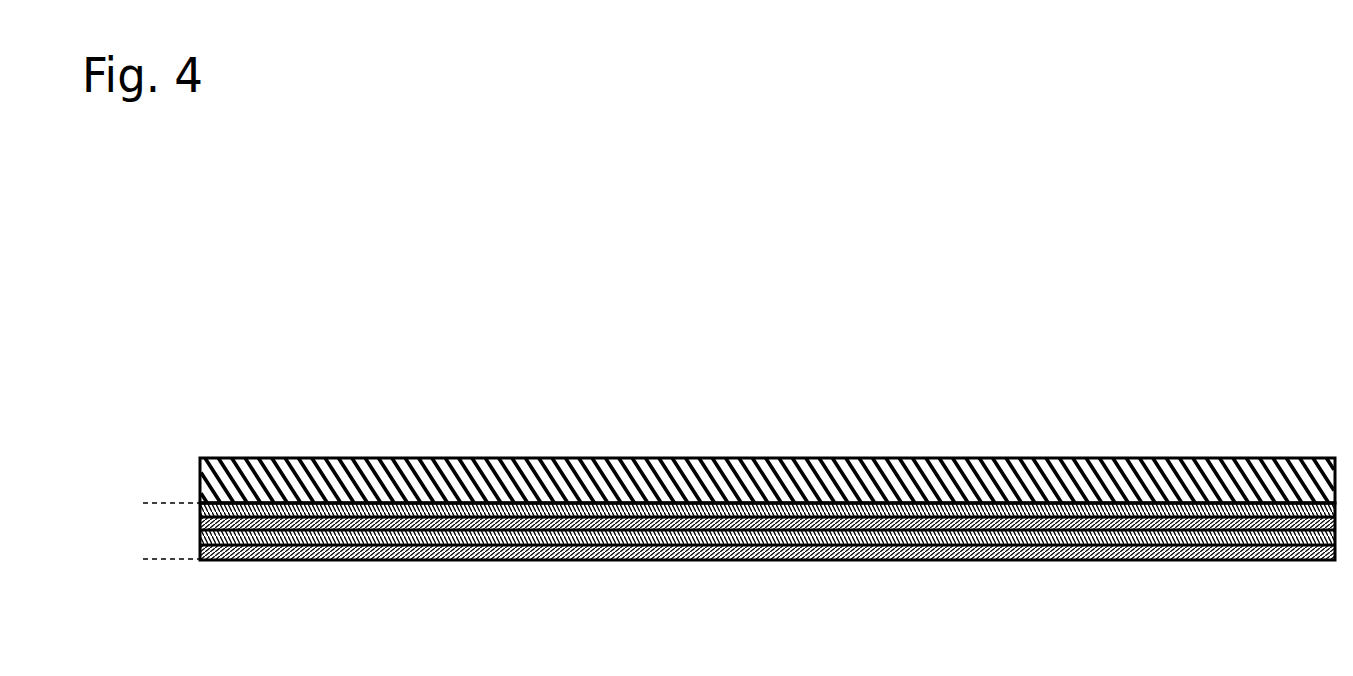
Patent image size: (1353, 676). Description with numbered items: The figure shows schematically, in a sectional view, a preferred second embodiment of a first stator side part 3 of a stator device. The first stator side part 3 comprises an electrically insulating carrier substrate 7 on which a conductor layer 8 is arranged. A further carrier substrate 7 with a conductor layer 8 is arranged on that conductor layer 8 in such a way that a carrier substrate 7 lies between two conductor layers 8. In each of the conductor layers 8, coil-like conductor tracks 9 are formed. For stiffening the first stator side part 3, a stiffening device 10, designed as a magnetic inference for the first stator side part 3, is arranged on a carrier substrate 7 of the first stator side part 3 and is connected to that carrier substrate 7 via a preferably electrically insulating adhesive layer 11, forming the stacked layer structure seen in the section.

The first stator side part 3 is at (158, 531).
The carrier substrate 7 is at (823, 540).
The conductor layer 8 is at (735, 556).
The coil-like conductor tracks 9 is at (632, 558).
The stiffening device 10 is at (1295, 490).
The adhesive layer 11 is at (1197, 500).